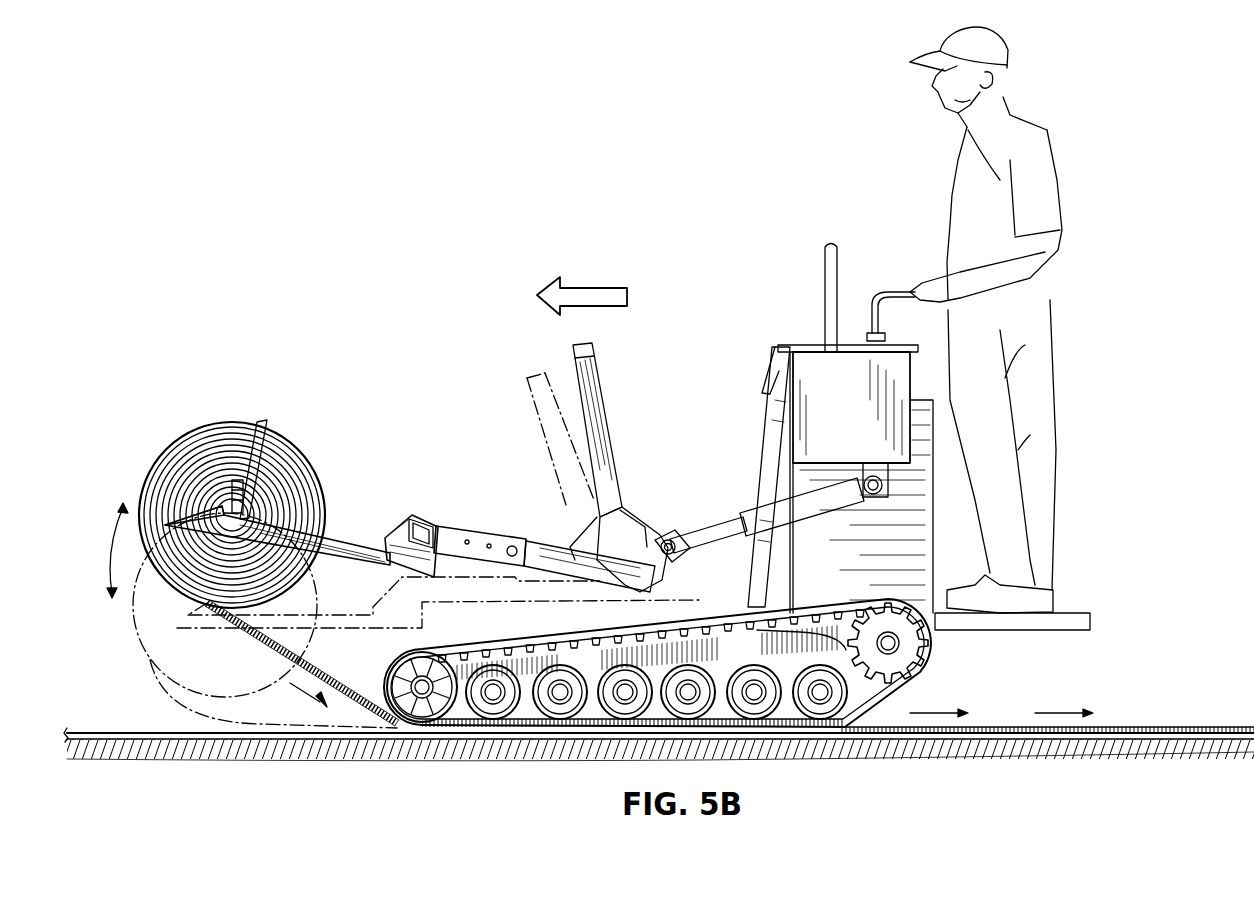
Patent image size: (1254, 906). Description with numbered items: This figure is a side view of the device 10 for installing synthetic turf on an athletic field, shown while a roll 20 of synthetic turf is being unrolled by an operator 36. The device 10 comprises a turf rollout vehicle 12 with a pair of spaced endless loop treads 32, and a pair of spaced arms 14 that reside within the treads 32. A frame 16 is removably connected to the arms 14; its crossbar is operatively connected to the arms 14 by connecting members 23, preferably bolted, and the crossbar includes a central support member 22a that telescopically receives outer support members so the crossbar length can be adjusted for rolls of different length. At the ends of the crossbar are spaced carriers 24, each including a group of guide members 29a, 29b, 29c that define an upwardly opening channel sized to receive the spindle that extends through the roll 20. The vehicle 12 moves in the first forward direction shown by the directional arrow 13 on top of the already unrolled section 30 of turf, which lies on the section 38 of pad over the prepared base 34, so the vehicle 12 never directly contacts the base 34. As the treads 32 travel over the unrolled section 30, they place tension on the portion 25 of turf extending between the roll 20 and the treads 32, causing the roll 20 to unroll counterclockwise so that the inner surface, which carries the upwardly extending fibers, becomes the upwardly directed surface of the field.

The device 10 is at (430, 420).
The turf rollout vehicle 12 is at (737, 486).
The directional arrow 13 is at (582, 288).
The arms 14 is at (568, 556).
The frame 16 is at (397, 540).
The roll of synthetic turf 20 is at (307, 452).
The central support member 22a is at (425, 527).
The connecting members 23 is at (487, 535).
The carriers 24 is at (340, 543).
The portion of turf 25 is at (273, 655).
The guide member 29a is at (192, 510).
The guide member 29b is at (237, 480).
The guide member 29c is at (270, 425).
The unrolled section of turf 30 is at (1112, 727).
The endless loop treads 32 is at (932, 652).
The prepared base 34 is at (362, 758).
The operator 36 is at (1035, 128).
The pad 38 is at (150, 733).